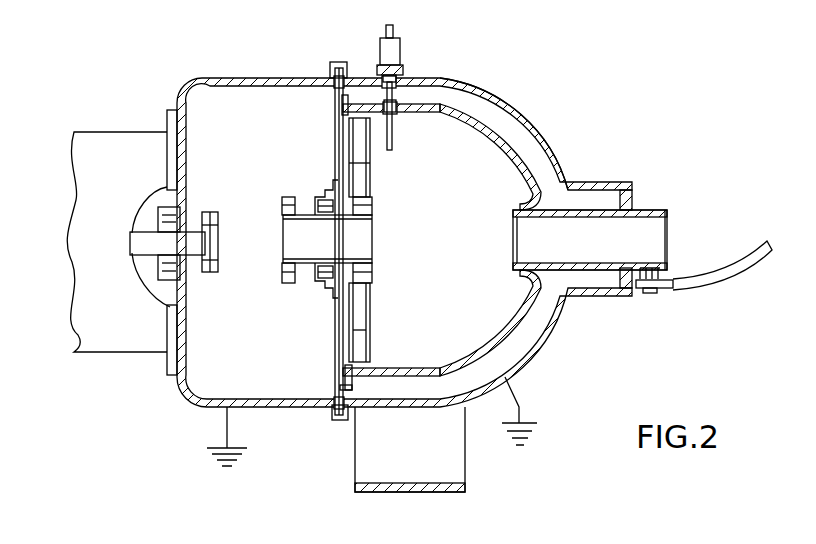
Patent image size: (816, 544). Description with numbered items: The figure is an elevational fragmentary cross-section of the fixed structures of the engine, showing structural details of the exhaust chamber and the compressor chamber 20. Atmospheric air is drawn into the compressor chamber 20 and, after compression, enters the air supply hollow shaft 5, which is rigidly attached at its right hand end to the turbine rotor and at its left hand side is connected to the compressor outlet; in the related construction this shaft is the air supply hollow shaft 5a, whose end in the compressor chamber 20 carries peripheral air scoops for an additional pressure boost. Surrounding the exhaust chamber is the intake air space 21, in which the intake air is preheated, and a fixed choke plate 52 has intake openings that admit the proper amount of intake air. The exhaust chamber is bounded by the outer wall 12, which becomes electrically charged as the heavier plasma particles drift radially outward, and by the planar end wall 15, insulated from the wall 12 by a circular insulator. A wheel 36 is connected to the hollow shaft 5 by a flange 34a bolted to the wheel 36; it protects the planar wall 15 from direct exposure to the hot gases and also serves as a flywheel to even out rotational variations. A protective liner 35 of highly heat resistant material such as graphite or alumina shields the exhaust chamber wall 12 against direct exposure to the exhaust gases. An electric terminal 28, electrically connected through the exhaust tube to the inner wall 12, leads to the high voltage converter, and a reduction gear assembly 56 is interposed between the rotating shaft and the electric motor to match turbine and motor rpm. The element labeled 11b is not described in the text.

The compressor chamber 20 is at (260, 113).
The intake air space 21 is at (483, 103).
The exhaust chamber wall 12 is at (510, 146).
The protective liner 35 is at (420, 113).
The fixed choke plate 52 is at (632, 188).
The electric terminal 28 is at (758, 262).
The electrode 11b is at (402, 45).
The planar end wall 15 is at (335, 338).
The wheel 36 is at (370, 177).
The flange 34a is at (373, 274).
The air supply hollow shaft 5a is at (332, 188).
The hollow shaft 5 is at (300, 283).
The reduction gear assembly 56 is at (186, 208).